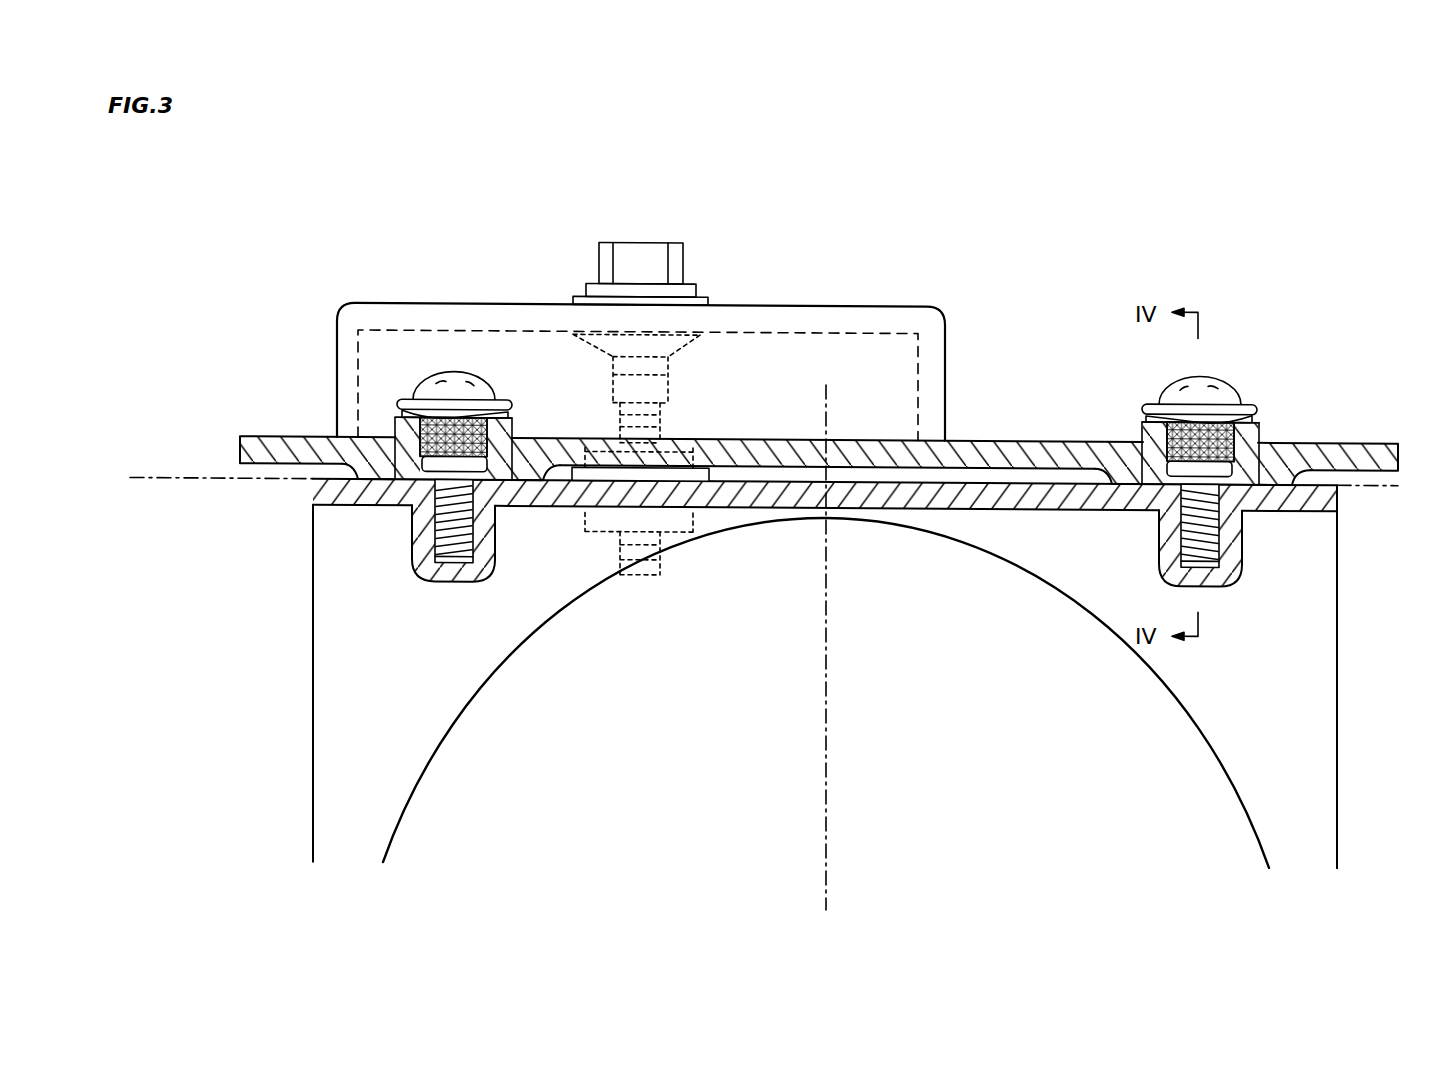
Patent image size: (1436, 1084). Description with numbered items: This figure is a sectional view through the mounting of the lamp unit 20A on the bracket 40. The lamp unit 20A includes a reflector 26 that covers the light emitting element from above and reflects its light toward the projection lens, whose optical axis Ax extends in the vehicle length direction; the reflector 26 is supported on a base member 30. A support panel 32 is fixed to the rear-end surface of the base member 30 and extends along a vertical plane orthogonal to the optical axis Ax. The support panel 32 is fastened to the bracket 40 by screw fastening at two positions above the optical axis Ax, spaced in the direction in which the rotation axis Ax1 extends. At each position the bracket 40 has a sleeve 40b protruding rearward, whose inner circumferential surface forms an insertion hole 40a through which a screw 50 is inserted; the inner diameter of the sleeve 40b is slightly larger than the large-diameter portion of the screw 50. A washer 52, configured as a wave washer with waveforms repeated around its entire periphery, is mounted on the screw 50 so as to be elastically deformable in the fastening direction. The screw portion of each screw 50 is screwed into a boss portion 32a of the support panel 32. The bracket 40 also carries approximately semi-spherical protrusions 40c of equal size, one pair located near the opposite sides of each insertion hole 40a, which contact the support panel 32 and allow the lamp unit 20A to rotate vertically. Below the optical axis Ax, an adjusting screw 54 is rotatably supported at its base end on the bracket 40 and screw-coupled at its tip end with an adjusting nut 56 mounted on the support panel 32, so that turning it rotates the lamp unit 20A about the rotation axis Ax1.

The lamp unit 20A is at (293, 567).
The reflector 26 is at (403, 815).
The base member 30 is at (313, 708).
The support panel 32 is at (955, 510).
The boss portion 32a is at (432, 585).
The bracket 40 is at (985, 443).
The insertion hole 40a is at (460, 420).
The sleeve 40b is at (397, 434).
The protrusion 40c is at (373, 473).
The screw 50 is at (433, 375).
The washer 52 is at (512, 413).
The adjusting screw 54 is at (661, 243).
The adjusting nut 56 is at (605, 537).
The optical axis Ax is at (832, 755).
The rotation axis Ax1 is at (195, 482).